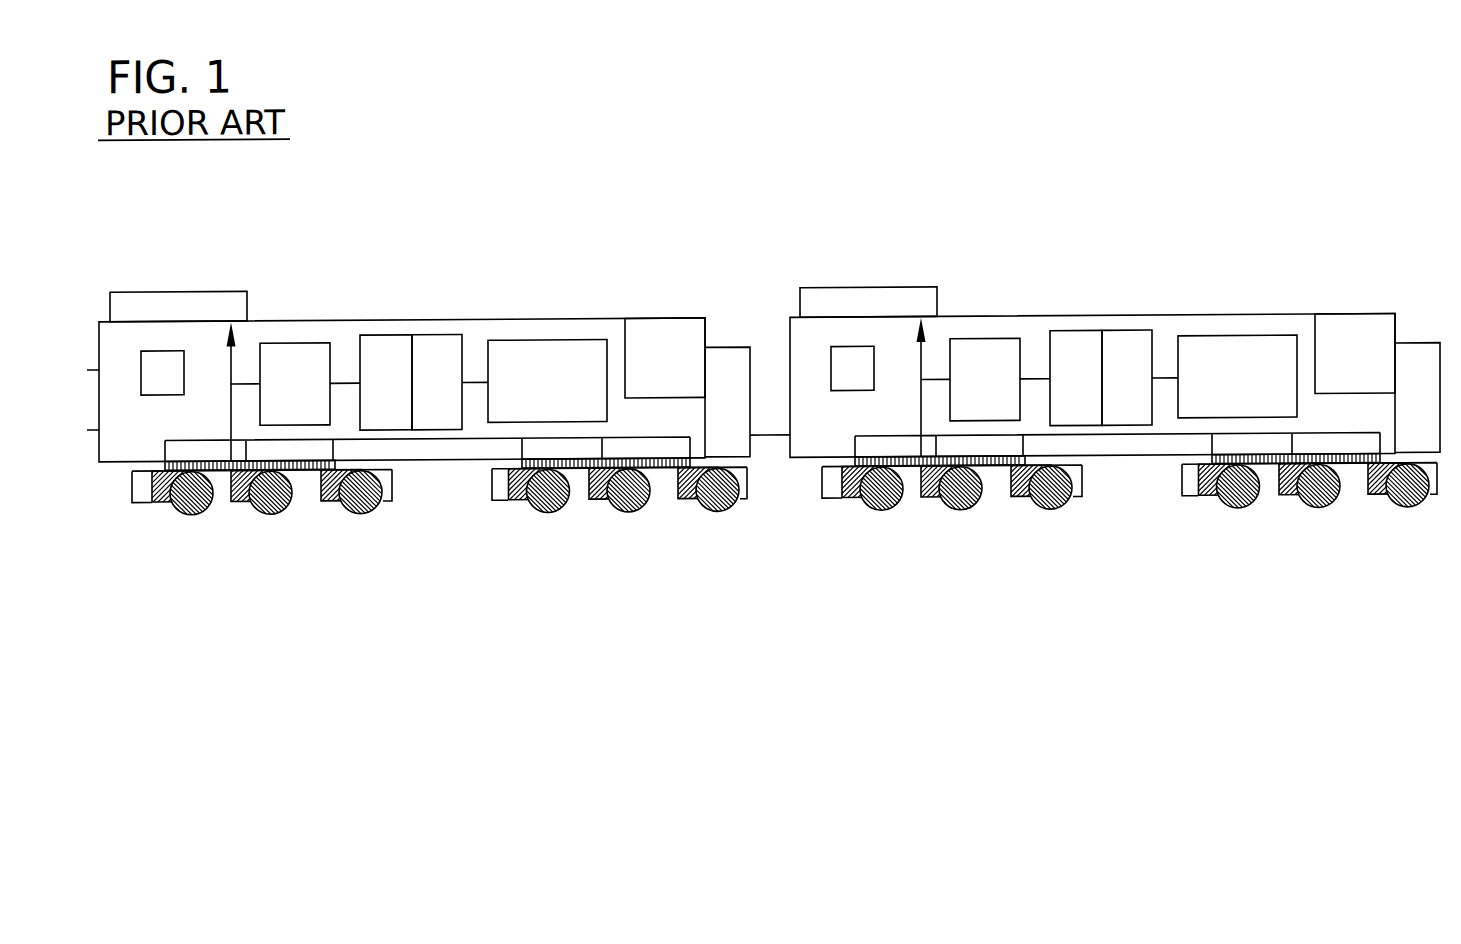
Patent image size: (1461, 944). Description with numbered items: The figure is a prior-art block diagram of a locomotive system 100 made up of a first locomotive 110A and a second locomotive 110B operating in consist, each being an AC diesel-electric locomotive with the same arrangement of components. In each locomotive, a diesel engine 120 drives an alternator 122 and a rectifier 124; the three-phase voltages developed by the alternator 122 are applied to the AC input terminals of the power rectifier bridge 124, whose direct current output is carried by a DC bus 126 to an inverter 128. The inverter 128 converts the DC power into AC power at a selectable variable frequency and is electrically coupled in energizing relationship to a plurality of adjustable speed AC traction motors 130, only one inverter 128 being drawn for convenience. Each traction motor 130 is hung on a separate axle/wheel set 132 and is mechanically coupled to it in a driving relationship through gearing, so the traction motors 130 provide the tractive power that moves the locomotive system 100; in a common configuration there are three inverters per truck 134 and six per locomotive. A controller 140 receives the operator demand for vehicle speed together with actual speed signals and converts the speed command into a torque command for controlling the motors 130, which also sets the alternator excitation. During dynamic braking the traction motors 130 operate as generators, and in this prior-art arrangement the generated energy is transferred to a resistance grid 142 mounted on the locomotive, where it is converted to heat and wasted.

The locomotive system 100 is at (750, 210).
The first locomotive 110A is at (1354, 322).
The second locomotive 110B is at (664, 322).
The diesel engine 120 is at (548, 344).
The alternator 122 is at (432, 338).
The rectifier 124 is at (383, 338).
The DC bus 126 is at (343, 386).
The inverter 128 is at (288, 345).
The traction motor 130 is at (192, 516).
The axle/wheel set 132 is at (242, 503).
The truck 134 is at (307, 472).
The controller 140 is at (157, 353).
The resistance grid 142 is at (175, 293).